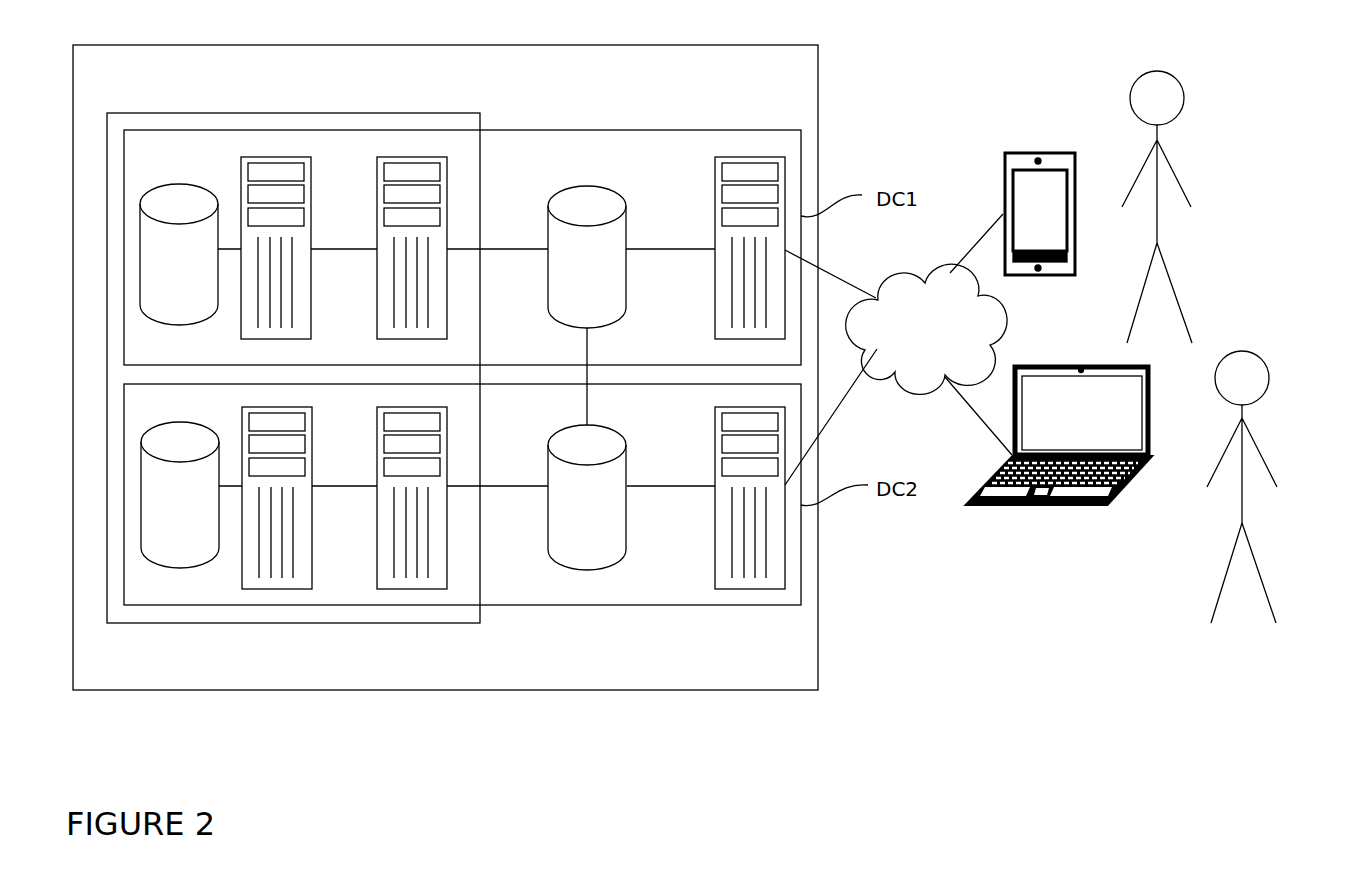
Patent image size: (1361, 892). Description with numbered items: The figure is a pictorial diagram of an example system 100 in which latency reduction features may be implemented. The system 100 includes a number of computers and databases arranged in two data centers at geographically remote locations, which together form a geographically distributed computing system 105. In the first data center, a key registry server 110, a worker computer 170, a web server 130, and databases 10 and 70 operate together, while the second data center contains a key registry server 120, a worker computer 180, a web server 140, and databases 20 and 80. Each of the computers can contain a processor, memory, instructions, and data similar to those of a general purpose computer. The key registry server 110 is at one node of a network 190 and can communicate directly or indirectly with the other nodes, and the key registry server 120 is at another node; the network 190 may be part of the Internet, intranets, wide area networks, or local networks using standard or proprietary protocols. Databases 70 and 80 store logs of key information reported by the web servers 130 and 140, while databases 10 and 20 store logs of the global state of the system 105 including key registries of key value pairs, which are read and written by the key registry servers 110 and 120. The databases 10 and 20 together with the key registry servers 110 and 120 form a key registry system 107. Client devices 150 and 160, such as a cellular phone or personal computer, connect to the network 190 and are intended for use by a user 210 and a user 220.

The system 100 is at (504, 414).
The geographically distributed computing system 105 is at (818, 148).
The key registry system 107 is at (481, 174).
The database 10 is at (177, 187).
The database 20 is at (180, 561).
The database 70 is at (587, 187).
The database 80 is at (585, 562).
The key registry server 110 is at (281, 157).
The key registry server 120 is at (275, 589).
The web server 130 is at (755, 157).
The web server 140 is at (752, 589).
The worker computer 170 is at (416, 157).
The worker computer 180 is at (410, 589).
The network 190 is at (926, 329).
The client device 150 is at (1040, 160).
The client device 160 is at (1040, 506).
The user 210 is at (1157, 222).
The user 220 is at (1242, 503).